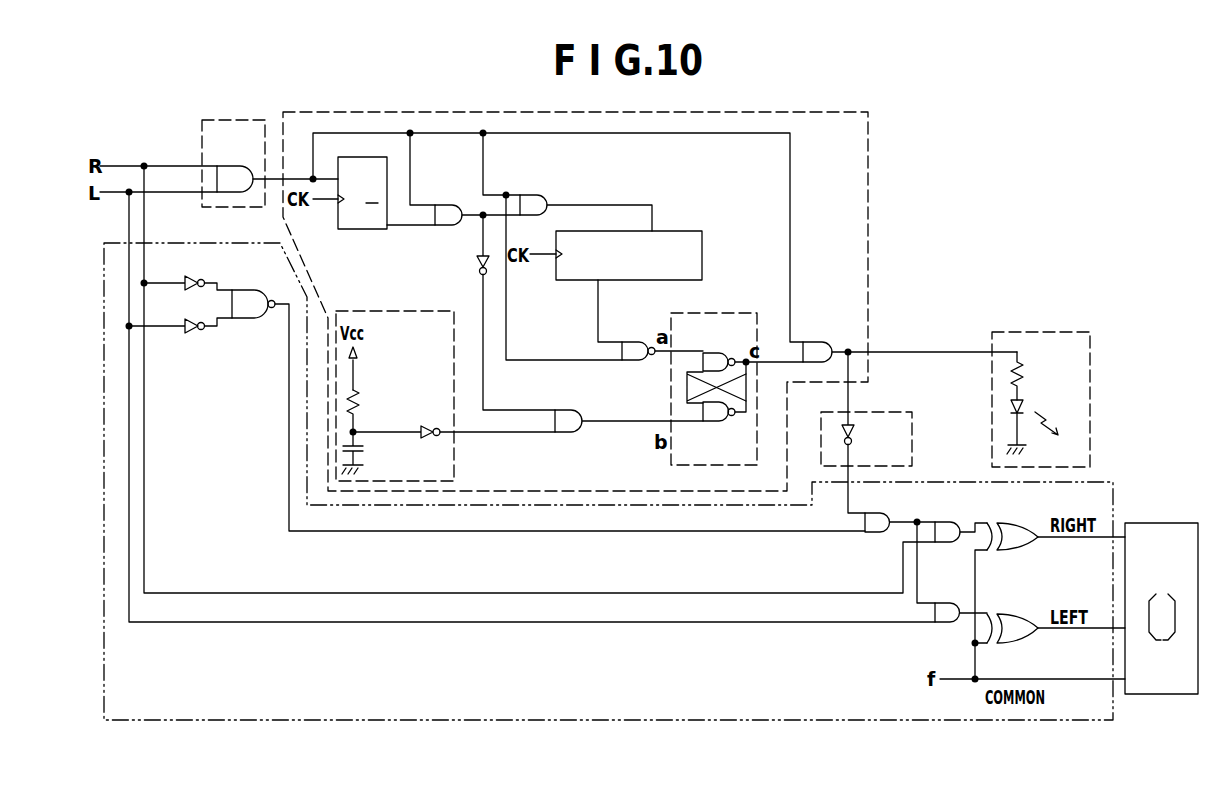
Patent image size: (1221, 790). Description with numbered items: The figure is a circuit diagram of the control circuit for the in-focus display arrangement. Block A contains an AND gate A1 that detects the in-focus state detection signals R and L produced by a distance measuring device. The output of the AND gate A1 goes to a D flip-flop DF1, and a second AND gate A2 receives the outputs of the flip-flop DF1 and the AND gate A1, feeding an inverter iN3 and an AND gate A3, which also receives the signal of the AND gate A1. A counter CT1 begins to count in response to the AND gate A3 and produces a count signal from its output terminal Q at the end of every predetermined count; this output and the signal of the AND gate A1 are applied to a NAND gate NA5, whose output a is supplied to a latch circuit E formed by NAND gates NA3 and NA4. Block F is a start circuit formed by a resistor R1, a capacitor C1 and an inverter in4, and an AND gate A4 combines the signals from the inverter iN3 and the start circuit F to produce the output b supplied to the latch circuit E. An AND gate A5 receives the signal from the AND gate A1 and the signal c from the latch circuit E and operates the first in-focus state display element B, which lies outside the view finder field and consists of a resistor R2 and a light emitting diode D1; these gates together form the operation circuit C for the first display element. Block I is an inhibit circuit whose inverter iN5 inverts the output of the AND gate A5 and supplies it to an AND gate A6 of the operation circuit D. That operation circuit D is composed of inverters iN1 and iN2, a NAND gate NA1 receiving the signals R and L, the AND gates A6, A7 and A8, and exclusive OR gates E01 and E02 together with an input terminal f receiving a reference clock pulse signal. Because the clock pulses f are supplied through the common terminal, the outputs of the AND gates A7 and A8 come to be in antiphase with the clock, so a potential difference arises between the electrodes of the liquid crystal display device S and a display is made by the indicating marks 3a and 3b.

The block A is at (243, 120).
The AND gate A1 is at (236, 166).
The AND gate A2 is at (450, 204).
The AND gate A3 is at (533, 194).
The AND gate A4 is at (567, 409).
The AND gate A5 is at (816, 341).
The AND gate A6 is at (873, 535).
The AND gate A7 is at (946, 520).
The AND gate A8 is at (943, 601).
The first in-focus state display element B is at (1045, 332).
The operation circuit for the first in-focus state display element C is at (870, 186).
The operation circuit for second in-focus state display elements D is at (952, 481).
The latch circuit E is at (718, 311).
The start circuit F is at (456, 457).
The inhibit circuit I is at (875, 411).
The second display element S is at (1160, 522).
The indicating mark 3a is at (1150, 596).
The indicating mark 3b is at (1168, 596).
The D flip-flop DF1 is at (357, 231).
The counter CT1 is at (689, 230).
The NAND gate NA1 is at (248, 321).
The NAND gate NA3 is at (714, 352).
The NAND gate NA4 is at (719, 424).
The NAND gate NA5 is at (636, 341).
The inverter iN1 is at (192, 278).
The inverter iN2 is at (194, 334).
The inverter iN3 is at (475, 262).
The inverter in4 is at (428, 425).
The inverter iN5 is at (856, 433).
The resistor R1 is at (360, 400).
The capacitor C1 is at (365, 450).
The resistor R2 is at (1024, 372).
The light emitting diode D1 is at (1024, 407).
The exclusive OR gate E01 is at (1012, 520).
The exclusive OR gate E02 is at (1006, 613).